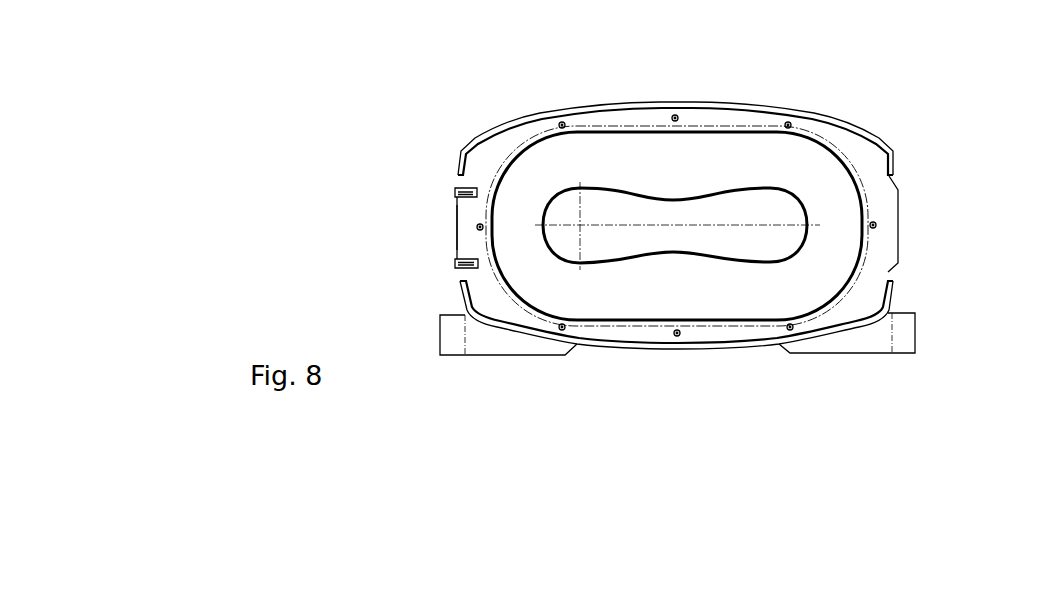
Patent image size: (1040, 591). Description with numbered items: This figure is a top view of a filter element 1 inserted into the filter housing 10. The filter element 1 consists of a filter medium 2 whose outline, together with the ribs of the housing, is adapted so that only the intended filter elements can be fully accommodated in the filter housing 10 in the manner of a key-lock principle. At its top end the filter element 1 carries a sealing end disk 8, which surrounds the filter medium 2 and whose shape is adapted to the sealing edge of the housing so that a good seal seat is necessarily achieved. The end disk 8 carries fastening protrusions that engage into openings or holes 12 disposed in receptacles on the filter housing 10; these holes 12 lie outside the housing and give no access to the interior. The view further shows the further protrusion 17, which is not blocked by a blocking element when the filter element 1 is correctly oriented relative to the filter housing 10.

The filter element 1 is at (422, 196).
The filter medium 2 is at (695, 155).
The sealing end disk 8 is at (868, 150).
The filter housing 10 is at (467, 152).
The openings or holes 12 is at (892, 295).
The further protrusion 17 is at (462, 236).